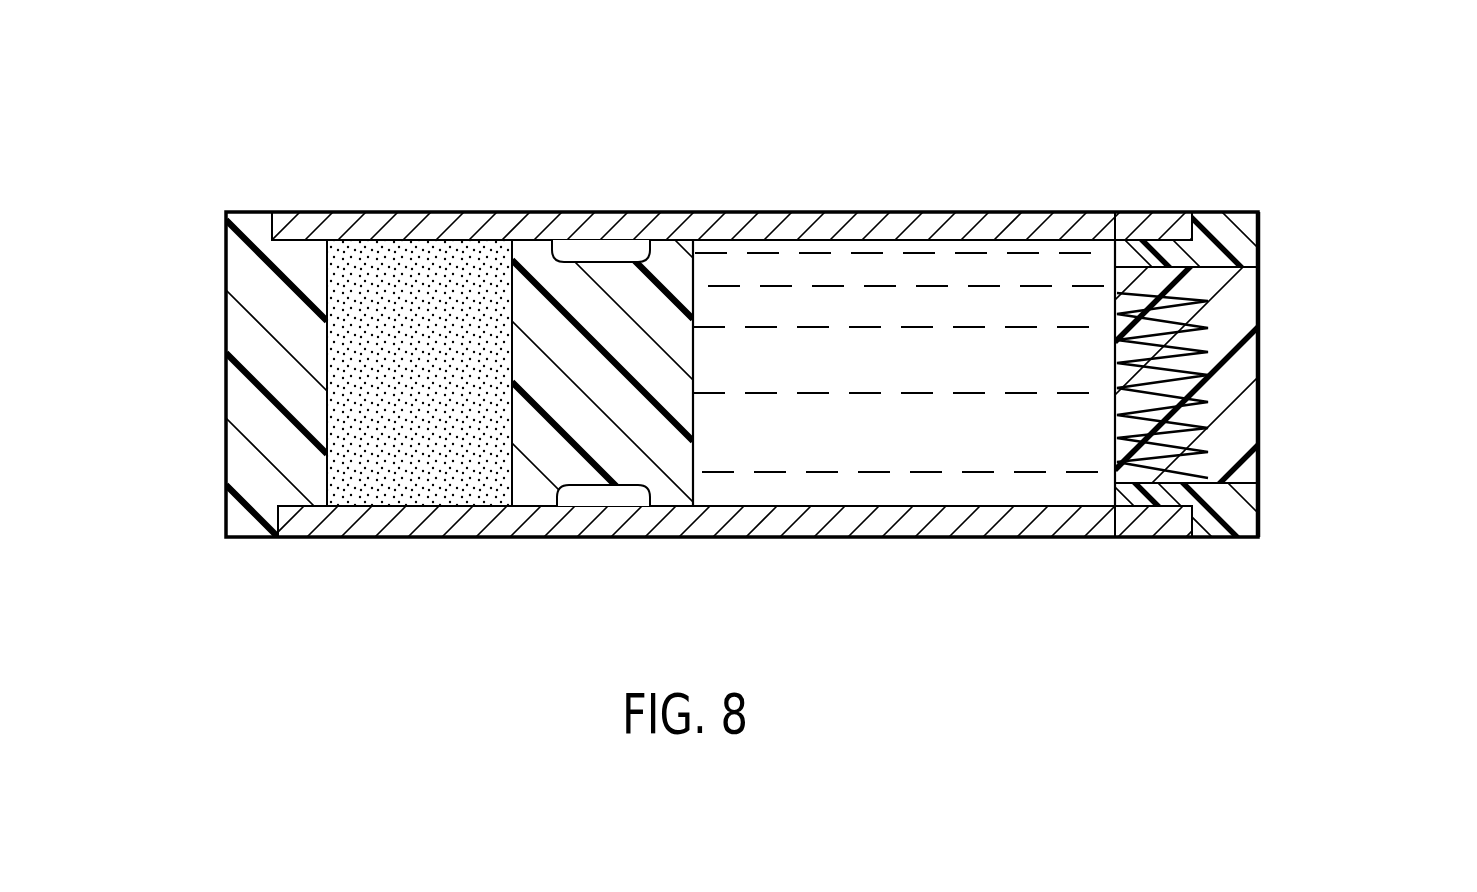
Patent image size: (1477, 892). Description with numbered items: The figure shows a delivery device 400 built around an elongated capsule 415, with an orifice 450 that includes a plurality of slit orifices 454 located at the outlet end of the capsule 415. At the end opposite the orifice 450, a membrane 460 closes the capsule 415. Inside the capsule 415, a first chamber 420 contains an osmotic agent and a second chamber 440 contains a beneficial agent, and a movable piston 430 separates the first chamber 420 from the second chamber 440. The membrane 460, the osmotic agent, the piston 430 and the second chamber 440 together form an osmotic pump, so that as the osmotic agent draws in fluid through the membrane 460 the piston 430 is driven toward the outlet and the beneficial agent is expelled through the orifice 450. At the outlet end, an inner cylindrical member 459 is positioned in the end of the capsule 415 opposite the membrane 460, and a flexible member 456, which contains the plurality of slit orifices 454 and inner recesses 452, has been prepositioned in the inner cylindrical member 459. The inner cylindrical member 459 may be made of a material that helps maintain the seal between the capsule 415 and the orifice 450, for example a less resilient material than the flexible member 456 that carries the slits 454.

The delivery device 400 is at (535, 153).
The capsule 415 is at (347, 222).
The first chamber 420 is at (377, 507).
The movable piston 430 is at (632, 463).
The second chamber 440 is at (782, 240).
The orifice 450 is at (1288, 357).
The inner recesses 452 is at (1128, 301).
The slit orifices 454 is at (1247, 320).
The flexible member 456 is at (1247, 472).
The inner cylindrical member 459 is at (1223, 230).
The membrane 460 is at (248, 457).